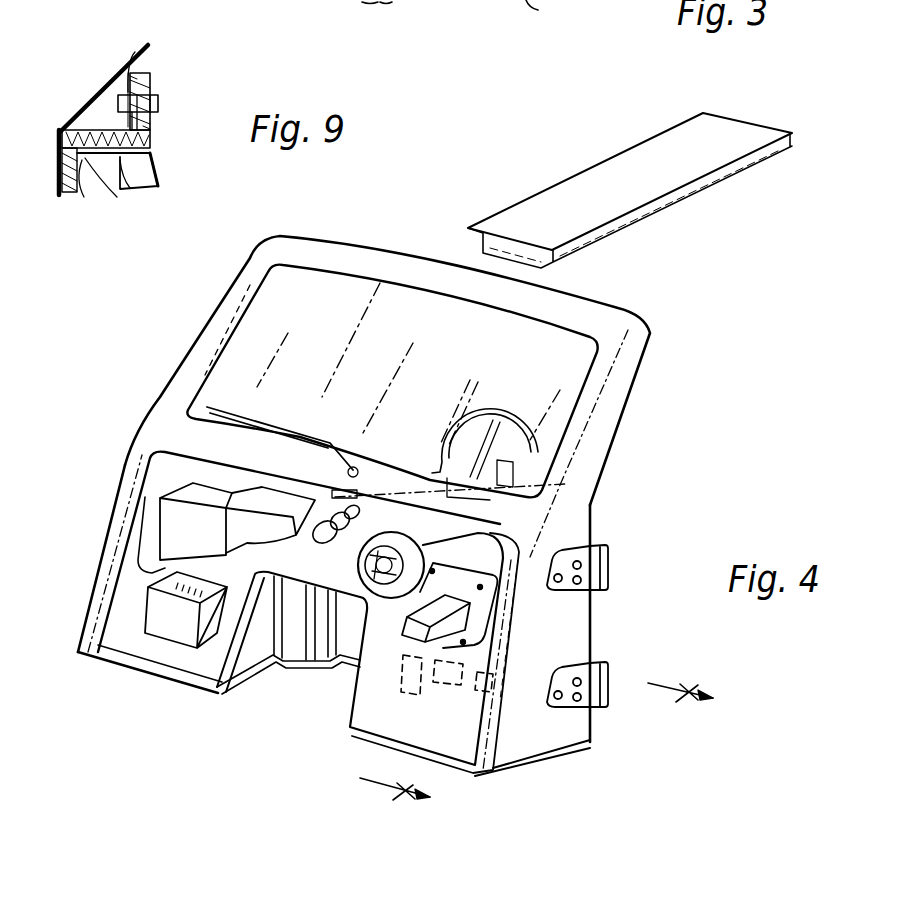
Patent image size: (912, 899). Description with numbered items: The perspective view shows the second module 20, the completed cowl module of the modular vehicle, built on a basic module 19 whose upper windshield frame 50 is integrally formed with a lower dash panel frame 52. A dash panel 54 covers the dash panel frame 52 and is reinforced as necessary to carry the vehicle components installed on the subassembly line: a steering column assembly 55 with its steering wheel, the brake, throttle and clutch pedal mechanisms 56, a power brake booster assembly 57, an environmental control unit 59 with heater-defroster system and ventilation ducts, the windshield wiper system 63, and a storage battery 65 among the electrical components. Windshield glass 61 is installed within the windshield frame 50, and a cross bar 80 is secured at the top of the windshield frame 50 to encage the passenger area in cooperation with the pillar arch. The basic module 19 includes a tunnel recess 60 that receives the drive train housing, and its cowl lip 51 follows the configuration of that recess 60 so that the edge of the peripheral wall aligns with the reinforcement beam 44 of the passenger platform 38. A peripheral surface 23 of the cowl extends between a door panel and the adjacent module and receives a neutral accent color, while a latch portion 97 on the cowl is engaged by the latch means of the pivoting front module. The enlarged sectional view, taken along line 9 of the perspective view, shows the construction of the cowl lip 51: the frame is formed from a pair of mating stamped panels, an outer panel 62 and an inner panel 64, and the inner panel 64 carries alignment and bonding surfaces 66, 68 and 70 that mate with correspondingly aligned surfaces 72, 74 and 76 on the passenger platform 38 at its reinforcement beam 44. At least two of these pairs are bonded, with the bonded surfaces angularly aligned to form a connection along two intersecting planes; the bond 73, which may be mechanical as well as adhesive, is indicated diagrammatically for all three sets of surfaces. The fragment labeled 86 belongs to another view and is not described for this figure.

In FIG. 4, the second module 20 is at (655, 415).
In FIG. 4, the windshield frame 50 is at (620, 352).
In FIG. 4, the windshield glass 61 is at (345, 295).
In FIG. 4, the cross bar 80 is at (697, 155).
In FIG. 4, the latch means position 97 is at (565, 484).
In FIG. 4, the basic module 19 is at (590, 510).
In FIG. 4, the power brake booster assembly 57 is at (505, 535).
In FIG. 4, the steering column assembly 55 is at (493, 598).
In FIG. 4, the peripheral surface 23 is at (572, 639).
In FIG. 4, the section line 9— 9 is at (525, 733).
In FIG. 9, the cowl lip 51 is at (117, 60).
In FIG. 4, the cowl lip 51 is at (595, 742).
In FIG. 4, the dash panel frame 52 is at (490, 715).
In FIG. 4, the pedal mechanisms 56 is at (452, 706).
In FIG. 4, the tunnel recess 60 is at (257, 645).
In FIG. 4, the windshield wiper system 63 is at (308, 560).
In FIG. 4, the storage battery 65 is at (163, 615).
In FIG. 4, the dash panel 54 is at (133, 603).
In FIG. 4, the environmental control unit 59 is at (180, 520).
In FIG. 4, the bracket 86 is at (544, 21).
In FIG. 9, the inner panel 64 is at (132, 90).
In FIG. 9, the outer panel 62 is at (107, 97).
In FIG. 9, the alignment and bonding surface 66 is at (158, 87).
In FIG. 9, the aligned surface 72 is at (120, 118).
In FIG. 9, the passenger platform 38 is at (152, 117).
In FIG. 9, the aligned surface 74 is at (62, 125).
In FIG. 9, the alignment and bonding surface 68 is at (152, 162).
In FIG. 9, the aligned surface 76 is at (61, 163).
In FIG. 9, the alignment and bonding surface 70 is at (87, 185).
In FIG. 9, the bond 73 is at (102, 177).
In FIG. 9, the reinforcement beam 44 is at (120, 170).